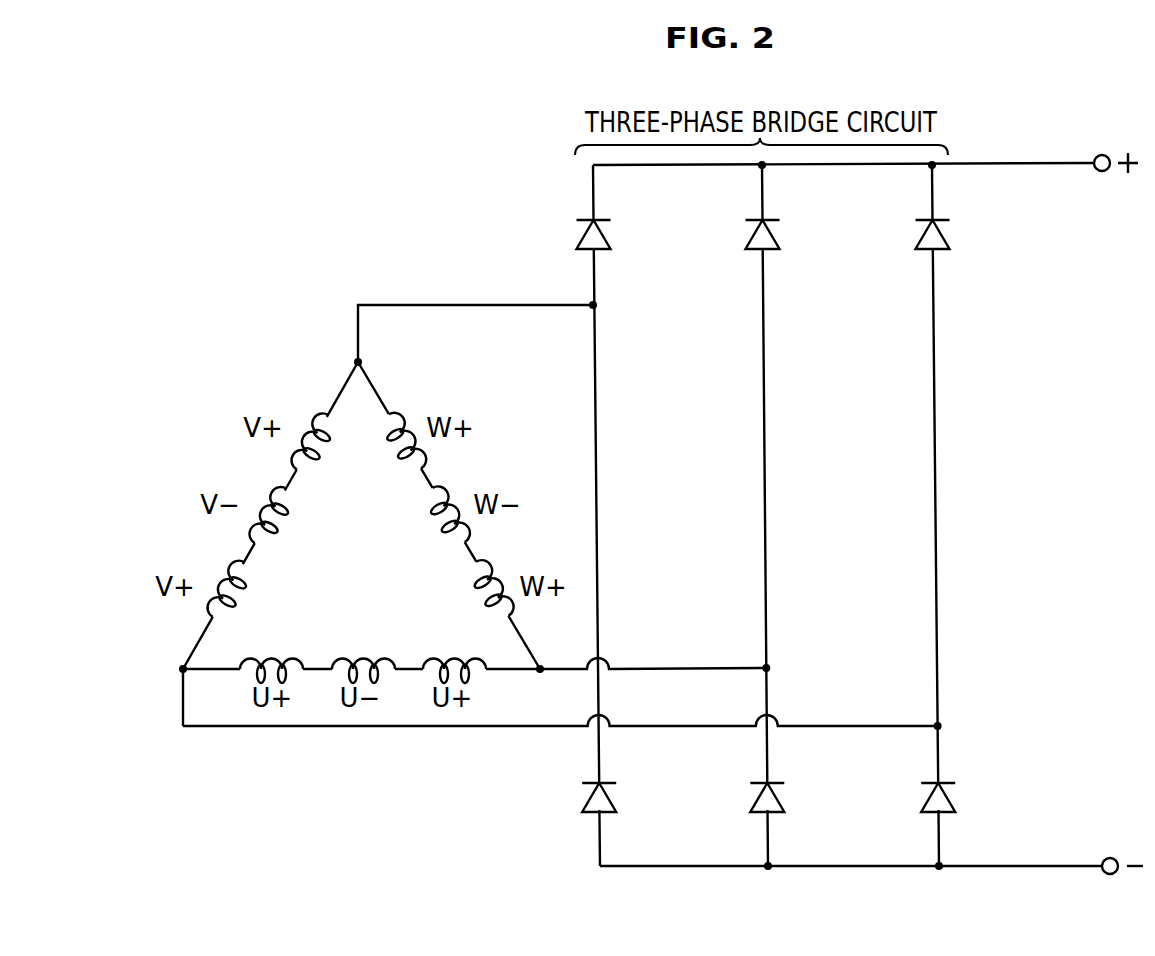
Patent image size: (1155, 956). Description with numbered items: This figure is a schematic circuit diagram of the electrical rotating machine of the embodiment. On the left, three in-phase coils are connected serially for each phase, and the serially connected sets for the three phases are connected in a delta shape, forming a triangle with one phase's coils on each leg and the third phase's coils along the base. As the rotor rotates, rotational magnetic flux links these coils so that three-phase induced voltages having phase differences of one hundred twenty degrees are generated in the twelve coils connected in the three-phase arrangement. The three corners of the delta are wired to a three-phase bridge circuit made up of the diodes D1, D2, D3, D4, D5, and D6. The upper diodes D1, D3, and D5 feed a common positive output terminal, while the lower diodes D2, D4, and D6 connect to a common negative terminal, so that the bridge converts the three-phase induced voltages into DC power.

The diode D1 is at (611, 234).
The diode D2 is at (616, 797).
The diode D3 is at (781, 234).
The diode D4 is at (785, 797).
The diode D5 is at (951, 234).
The diode D6 is at (955, 797).